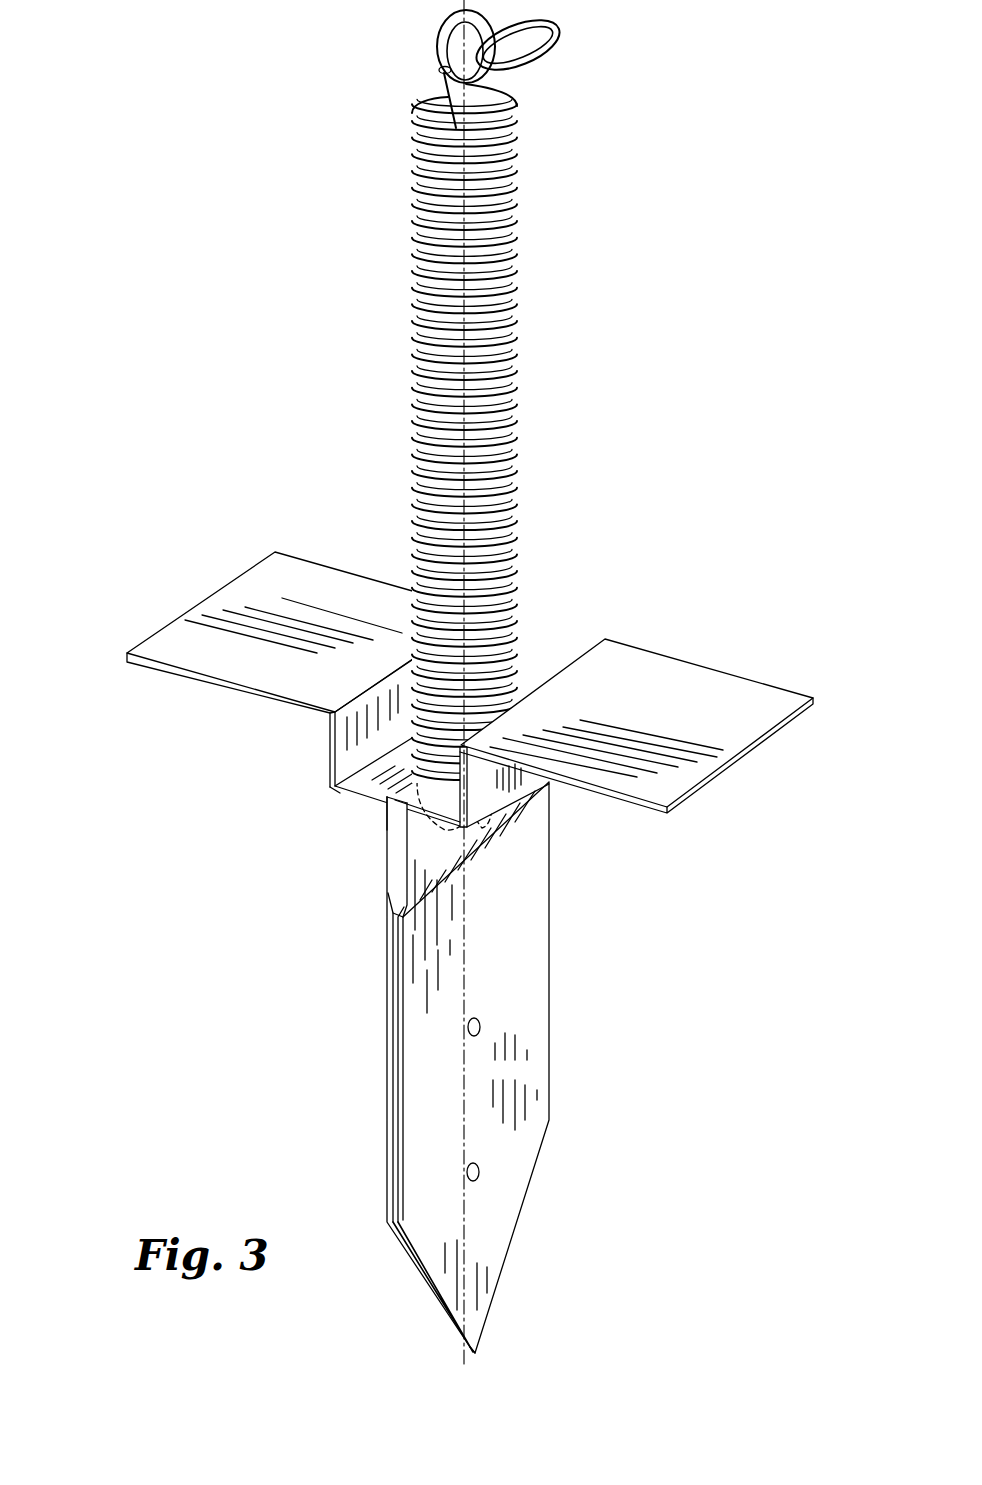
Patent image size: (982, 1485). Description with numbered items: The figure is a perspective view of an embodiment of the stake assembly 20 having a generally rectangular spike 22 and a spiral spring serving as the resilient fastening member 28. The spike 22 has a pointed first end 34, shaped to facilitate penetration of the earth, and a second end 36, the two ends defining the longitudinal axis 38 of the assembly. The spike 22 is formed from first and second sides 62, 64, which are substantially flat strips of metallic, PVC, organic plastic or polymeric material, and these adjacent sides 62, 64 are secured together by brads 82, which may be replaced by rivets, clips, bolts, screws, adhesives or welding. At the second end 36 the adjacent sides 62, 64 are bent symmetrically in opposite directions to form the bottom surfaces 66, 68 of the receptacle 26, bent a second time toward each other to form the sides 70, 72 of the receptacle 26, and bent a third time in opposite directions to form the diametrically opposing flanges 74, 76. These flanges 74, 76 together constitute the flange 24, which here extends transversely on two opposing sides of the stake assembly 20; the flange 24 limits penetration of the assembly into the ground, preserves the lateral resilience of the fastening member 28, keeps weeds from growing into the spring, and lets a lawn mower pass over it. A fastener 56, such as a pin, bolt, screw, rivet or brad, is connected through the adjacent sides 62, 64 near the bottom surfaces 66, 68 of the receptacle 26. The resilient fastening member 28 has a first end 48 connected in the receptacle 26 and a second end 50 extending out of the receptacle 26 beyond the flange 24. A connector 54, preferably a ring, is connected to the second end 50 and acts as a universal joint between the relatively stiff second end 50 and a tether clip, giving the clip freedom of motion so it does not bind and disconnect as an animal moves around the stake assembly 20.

The stake assembly 20 is at (345, 478).
The spike 22 is at (418, 1111).
The flange 24 is at (296, 682).
The receptacle 26 is at (387, 826).
The resilient fastening member 28 is at (497, 390).
The first end 34 is at (477, 1346).
The second end 36 is at (392, 843).
The longitudinal axis 38 is at (447, 37).
The first end 48 is at (387, 791).
The second end 50 is at (437, 36).
The connector 54 is at (558, 27).
The fastener 56 is at (335, 787).
The first side 62 is at (390, 964).
The second side 64 is at (400, 1011).
The bottom surface 66 is at (388, 794).
The bottom surface 68 is at (437, 823).
The side 70 is at (333, 740).
The side 72 is at (482, 797).
The flange 74 is at (252, 590).
The flange 76 is at (633, 672).
The brads 82 is at (478, 1022).